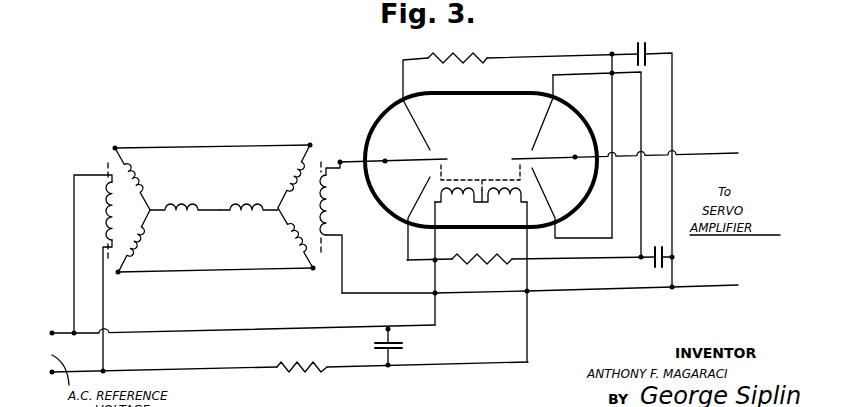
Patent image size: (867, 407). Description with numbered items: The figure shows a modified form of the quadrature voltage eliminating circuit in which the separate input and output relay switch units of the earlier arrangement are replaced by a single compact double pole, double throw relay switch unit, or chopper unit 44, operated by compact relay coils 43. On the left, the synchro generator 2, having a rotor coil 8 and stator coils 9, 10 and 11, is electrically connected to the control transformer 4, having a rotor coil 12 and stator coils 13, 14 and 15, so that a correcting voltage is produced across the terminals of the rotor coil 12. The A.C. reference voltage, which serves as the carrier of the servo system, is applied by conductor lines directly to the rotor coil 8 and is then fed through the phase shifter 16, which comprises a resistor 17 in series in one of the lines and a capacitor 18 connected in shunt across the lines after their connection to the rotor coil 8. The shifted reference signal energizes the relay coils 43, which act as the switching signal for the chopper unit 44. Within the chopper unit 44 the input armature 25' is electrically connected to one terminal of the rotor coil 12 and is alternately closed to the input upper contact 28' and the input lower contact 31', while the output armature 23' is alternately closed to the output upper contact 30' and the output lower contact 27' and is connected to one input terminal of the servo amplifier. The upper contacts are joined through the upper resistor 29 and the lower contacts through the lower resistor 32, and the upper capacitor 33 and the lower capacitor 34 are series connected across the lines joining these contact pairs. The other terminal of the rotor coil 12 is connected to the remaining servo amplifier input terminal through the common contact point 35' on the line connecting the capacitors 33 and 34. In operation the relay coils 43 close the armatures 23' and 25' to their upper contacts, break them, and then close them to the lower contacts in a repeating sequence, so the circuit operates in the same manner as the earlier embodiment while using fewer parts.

The synchro generator 2 is at (144, 210).
The control transformer 4 is at (285, 206).
The rotor coil 8 is at (105, 212).
The stator coil 9 is at (142, 240).
The stator coil 10 is at (182, 205).
The stator coil 11 is at (143, 178).
The rotor coil 12 is at (332, 205).
The stator coil 13 is at (287, 176).
The stator coil 14 is at (240, 203).
The stator coil 15 is at (288, 240).
The phase shifter 16 is at (315, 353).
The resistor 17 is at (302, 382).
The capacitor 18 is at (402, 345).
The output armature 23' is at (625, 148).
The input armature 25' is at (393, 150).
The output lower contact 27' is at (572, 203).
The input upper contact 28' is at (434, 125).
The upper resistor 29 is at (457, 62).
The output upper contact 30' is at (521, 112).
The input lower contact 31' is at (407, 218).
The lower resistor 32 is at (462, 266).
The upper capacitor 33 is at (642, 39).
The lower capacitor 34 is at (655, 266).
The common contact point 35' is at (704, 302).
The relay coils 43 is at (477, 213).
The double pole, double throw relay switch unit 44 is at (380, 126).